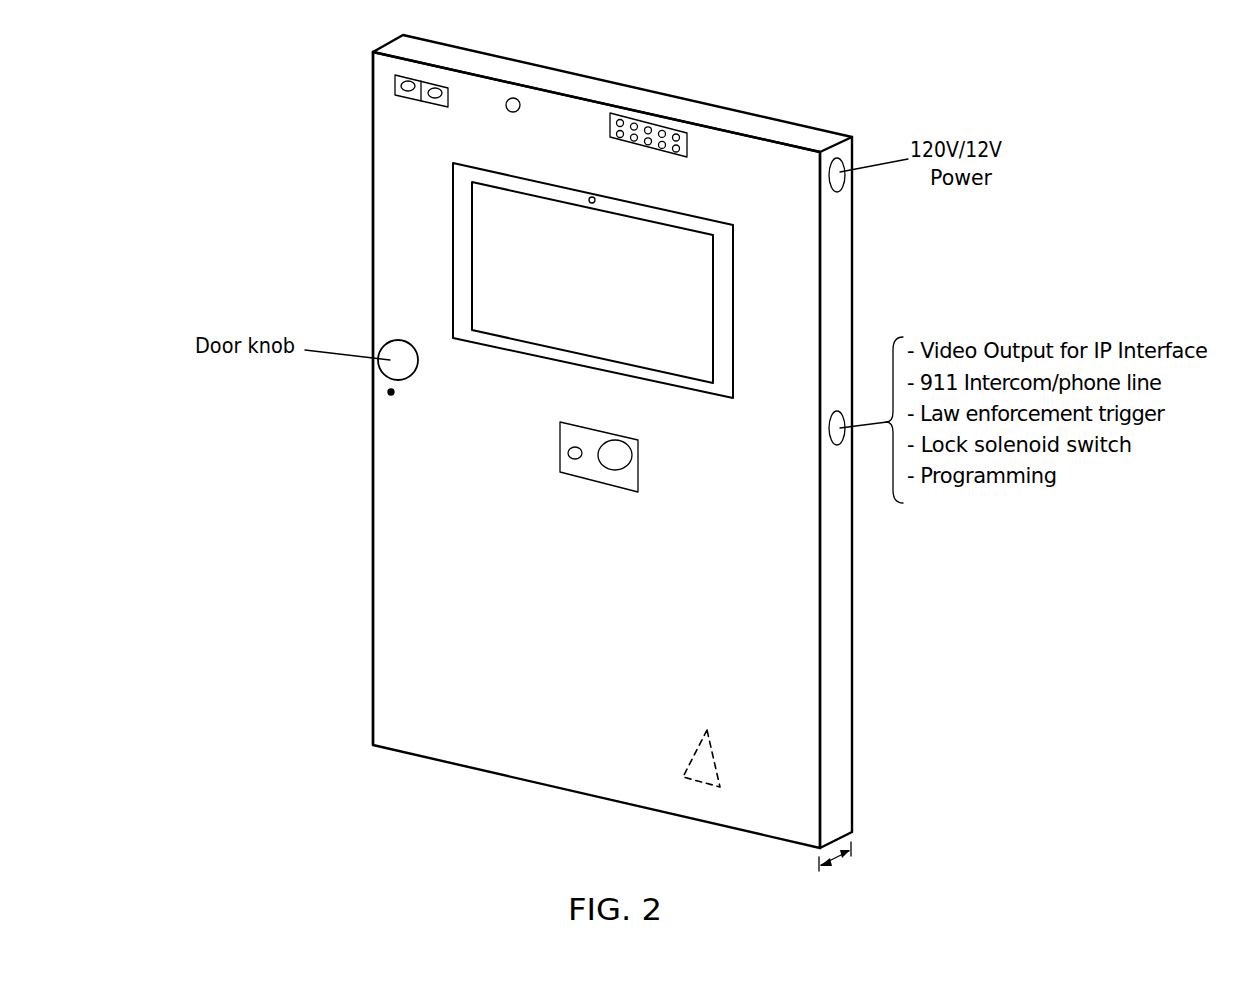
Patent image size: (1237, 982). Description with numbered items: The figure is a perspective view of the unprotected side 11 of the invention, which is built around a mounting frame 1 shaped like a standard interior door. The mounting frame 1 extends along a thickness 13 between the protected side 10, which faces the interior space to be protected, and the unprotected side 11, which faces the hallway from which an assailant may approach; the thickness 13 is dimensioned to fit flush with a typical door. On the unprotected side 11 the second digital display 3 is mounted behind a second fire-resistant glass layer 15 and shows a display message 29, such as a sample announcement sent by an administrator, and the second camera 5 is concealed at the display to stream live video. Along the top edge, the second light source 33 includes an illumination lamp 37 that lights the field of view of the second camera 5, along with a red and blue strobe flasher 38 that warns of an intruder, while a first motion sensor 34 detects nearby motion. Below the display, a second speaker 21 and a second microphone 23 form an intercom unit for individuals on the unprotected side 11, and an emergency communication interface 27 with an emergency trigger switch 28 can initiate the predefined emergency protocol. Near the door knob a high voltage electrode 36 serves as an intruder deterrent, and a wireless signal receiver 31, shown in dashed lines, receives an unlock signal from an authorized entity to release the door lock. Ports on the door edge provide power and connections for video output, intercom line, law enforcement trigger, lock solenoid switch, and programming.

The mounting frame 1 is at (387, 571).
The second digital display 3 is at (478, 243).
The second camera 5 is at (592, 197).
The protected side 10 is at (880, 732).
The unprotected side 11 is at (348, 717).
The thickness 13 is at (838, 860).
The second fire-resistant glass layer 15 is at (454, 167).
The second speaker 21 is at (614, 447).
The second microphone 23 is at (612, 479).
The emergency communication interface 27 is at (572, 474).
The emergency trigger switch 28 is at (567, 452).
The display message 29 is at (523, 246).
The wireless signal receiver 31 is at (708, 755).
The second light source 33 is at (712, 140).
The first motion sensor 34 is at (515, 98).
The high voltage electrode 36 is at (393, 395).
The illumination lamp 37 is at (648, 117).
The red and blue strobe flasher 38 is at (433, 82).